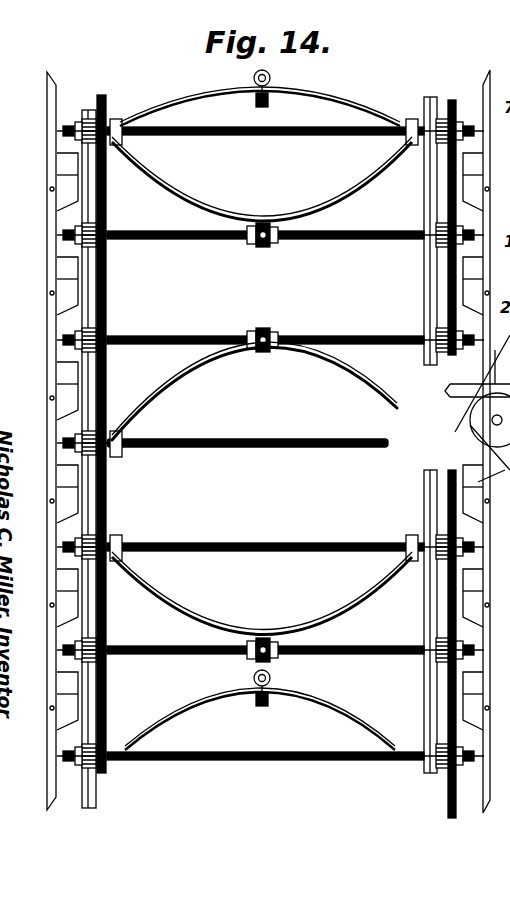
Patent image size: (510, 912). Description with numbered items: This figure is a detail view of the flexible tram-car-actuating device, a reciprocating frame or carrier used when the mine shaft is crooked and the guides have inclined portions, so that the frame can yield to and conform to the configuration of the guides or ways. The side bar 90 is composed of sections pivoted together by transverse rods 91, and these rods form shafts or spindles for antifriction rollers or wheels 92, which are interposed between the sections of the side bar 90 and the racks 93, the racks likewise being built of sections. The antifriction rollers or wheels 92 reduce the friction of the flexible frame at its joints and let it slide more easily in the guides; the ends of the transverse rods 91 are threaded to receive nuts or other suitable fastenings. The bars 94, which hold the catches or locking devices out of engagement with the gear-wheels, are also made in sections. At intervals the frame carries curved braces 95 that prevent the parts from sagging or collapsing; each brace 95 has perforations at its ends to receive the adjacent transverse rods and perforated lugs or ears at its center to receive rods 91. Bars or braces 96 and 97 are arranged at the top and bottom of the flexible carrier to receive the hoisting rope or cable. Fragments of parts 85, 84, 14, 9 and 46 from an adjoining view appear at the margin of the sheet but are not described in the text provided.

The side bar 90 is at (107, 688).
The transverse rods 91 is at (188, 238).
The antifriction rollers or wheels 92 is at (94, 230).
The racks 93 is at (65, 305).
The bars 94 is at (64, 244).
The curved braces 95 is at (163, 188).
The top bar or brace 96 is at (382, 110).
The bottom bar or brace 97 is at (307, 704).
The disk 85 is at (470, 422).
The lever 84 is at (480, 402).
The shaft 14 is at (480, 378).
The frame member 9 is at (493, 362).
The link 46 is at (494, 485).